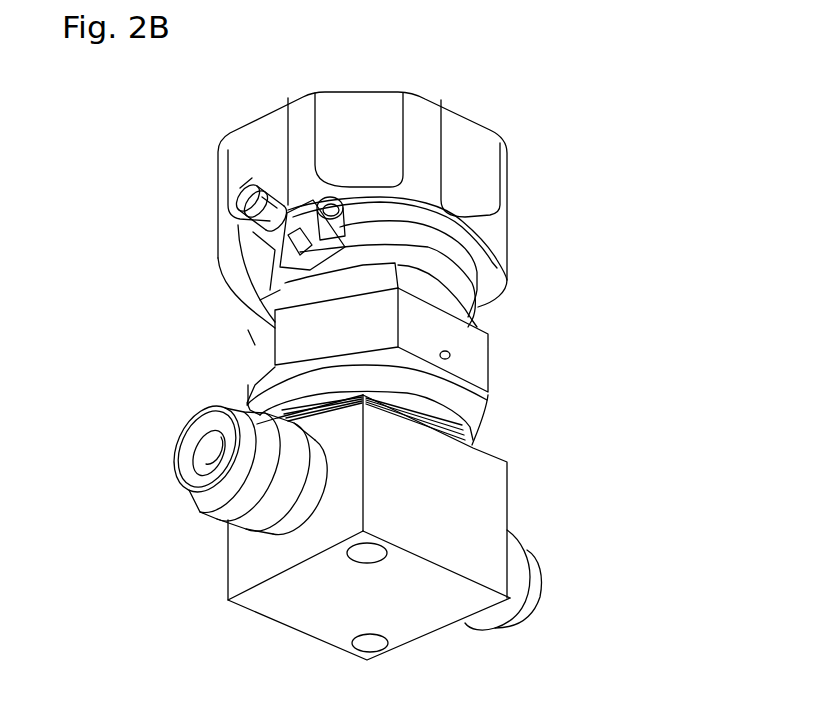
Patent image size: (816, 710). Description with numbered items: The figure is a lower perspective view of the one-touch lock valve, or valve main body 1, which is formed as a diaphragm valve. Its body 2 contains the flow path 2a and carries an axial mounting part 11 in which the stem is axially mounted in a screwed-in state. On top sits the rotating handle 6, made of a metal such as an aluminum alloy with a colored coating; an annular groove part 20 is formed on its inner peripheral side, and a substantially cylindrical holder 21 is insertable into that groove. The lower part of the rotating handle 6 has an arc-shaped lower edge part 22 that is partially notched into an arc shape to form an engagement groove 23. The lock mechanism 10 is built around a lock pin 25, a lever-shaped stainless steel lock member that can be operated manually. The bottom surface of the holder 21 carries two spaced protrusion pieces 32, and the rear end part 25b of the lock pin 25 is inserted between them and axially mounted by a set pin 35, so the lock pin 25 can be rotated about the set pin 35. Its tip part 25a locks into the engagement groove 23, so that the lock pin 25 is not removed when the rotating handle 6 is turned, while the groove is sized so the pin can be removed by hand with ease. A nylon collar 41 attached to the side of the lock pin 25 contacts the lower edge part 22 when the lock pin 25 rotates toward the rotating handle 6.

The valve main body 1 is at (232, 355).
The body 2 is at (457, 497).
The flow path 2a is at (186, 458).
The rotating handle 6 is at (473, 177).
The lock mechanism 10 is at (260, 220).
The axial mounting part 11 is at (405, 262).
The annular groove part 20 is at (477, 237).
The holder 21 is at (410, 240).
The lower edge part 22 is at (480, 297).
The engagement groove 23 is at (247, 185).
The lock pin 25 is at (245, 203).
The tip part 25a is at (272, 193).
The rear end part 25b is at (260, 300).
The protrusion piece 32 is at (297, 203).
The set pin 35 is at (333, 200).
The collar 41 is at (253, 232).